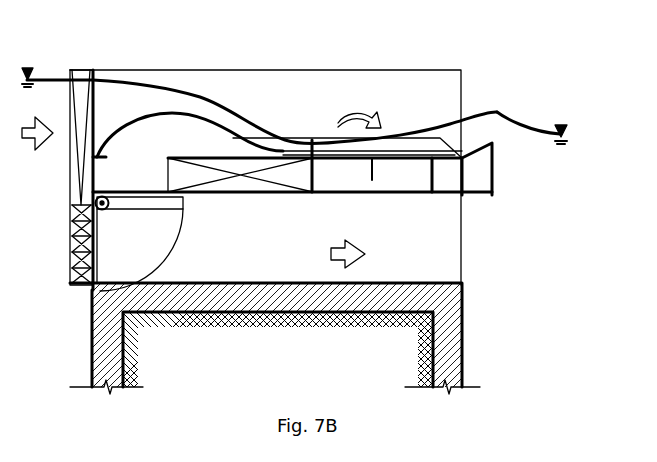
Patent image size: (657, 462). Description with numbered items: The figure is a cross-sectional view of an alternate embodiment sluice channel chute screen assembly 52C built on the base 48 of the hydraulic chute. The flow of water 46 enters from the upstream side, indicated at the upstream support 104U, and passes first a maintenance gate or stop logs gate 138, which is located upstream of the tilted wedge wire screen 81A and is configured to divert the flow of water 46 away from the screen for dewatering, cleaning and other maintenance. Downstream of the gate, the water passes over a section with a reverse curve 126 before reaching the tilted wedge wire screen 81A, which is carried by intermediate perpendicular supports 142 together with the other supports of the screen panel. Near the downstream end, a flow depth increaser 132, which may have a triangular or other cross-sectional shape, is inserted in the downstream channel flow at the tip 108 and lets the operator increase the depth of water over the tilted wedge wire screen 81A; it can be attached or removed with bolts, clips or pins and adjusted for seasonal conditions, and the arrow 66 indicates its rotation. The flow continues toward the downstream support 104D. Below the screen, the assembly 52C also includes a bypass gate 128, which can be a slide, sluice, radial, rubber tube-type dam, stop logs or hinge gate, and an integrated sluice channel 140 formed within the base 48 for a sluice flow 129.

The upstream support 104U is at (30, 68).
The maintenance gate or stop logs gate 138 is at (78, 70).
The sluice channel chute screen assembly 52C is at (211, 52).
The reverse curve 126 is at (233, 138).
The rotation direction 66 is at (364, 116).
The tilted wedge wire screen 81A is at (428, 158).
The downstream support 104D is at (560, 124).
The flow depth increaser 132 is at (476, 120).
The membrane tip 108 is at (497, 118).
The flow of water 46 is at (39, 142).
The bypass gate 128 is at (70, 228).
The intermediate perpendicular supports 142 is at (460, 195).
The sluice flow 129 is at (331, 255).
The base 48 is at (462, 313).
The integrated sluice channel 140 is at (215, 238).